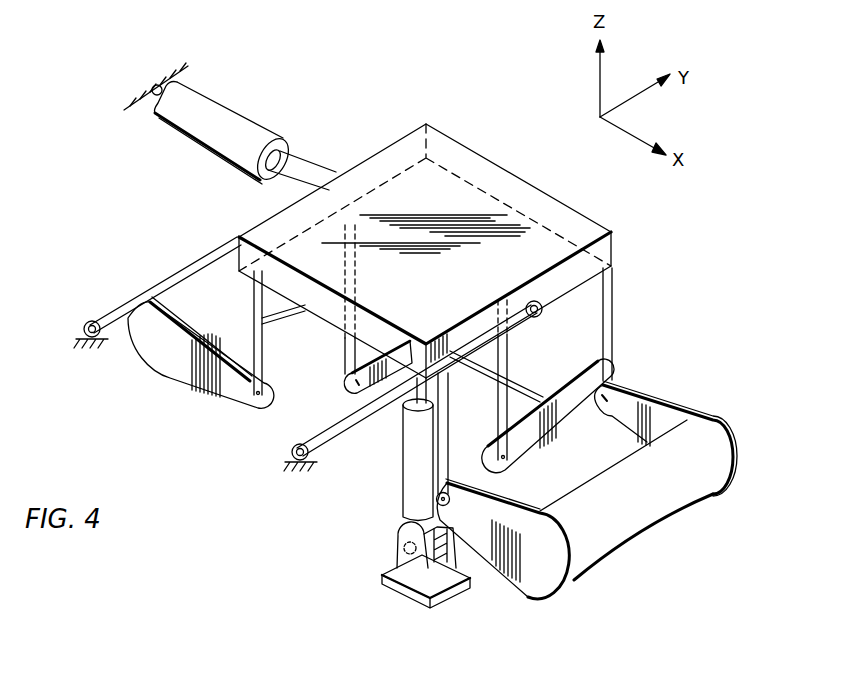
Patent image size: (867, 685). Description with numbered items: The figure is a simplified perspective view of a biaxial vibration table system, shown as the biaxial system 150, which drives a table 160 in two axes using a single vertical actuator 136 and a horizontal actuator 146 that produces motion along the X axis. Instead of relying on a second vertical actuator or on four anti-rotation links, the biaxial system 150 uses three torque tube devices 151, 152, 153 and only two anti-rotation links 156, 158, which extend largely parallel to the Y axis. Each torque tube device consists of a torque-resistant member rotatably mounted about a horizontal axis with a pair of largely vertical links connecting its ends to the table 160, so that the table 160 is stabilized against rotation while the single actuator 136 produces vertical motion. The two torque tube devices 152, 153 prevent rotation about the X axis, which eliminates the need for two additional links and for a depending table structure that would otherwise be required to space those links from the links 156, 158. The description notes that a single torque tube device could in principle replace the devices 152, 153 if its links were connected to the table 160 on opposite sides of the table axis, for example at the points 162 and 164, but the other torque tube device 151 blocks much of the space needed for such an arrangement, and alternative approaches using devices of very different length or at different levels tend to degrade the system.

The actuator 136 is at (402, 482).
The horizontal actuator 146 is at (243, 121).
The biaxial system 150 is at (687, 383).
The torque tube device 151 is at (617, 377).
The torque tube device 152 is at (158, 378).
The torque tube device 153 is at (727, 441).
The anti-rotation link 156 is at (320, 434).
The anti-rotation link 158 is at (197, 263).
The table 160 is at (617, 240).
The point 162 is at (345, 322).
The point 164 is at (520, 210).